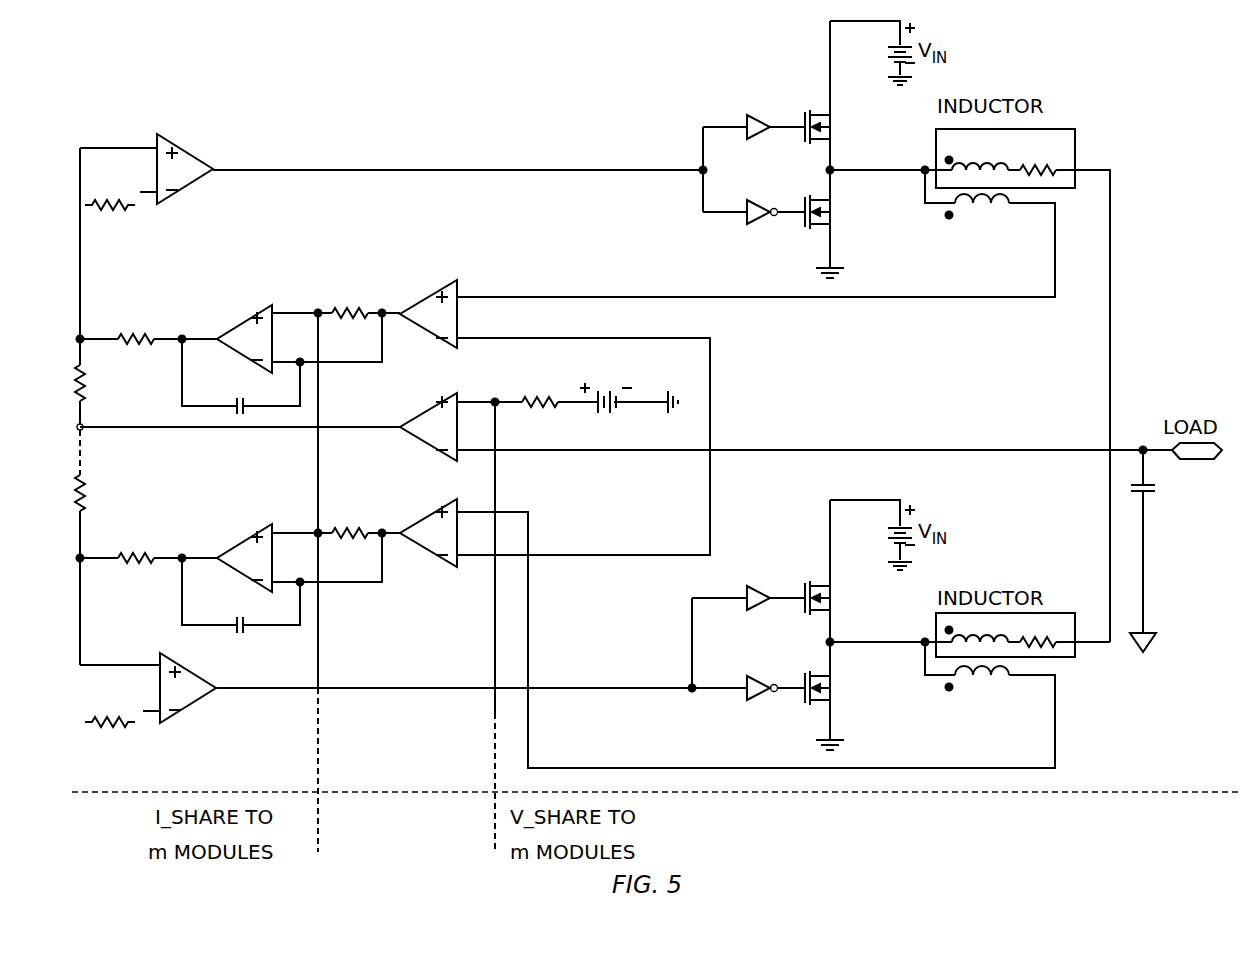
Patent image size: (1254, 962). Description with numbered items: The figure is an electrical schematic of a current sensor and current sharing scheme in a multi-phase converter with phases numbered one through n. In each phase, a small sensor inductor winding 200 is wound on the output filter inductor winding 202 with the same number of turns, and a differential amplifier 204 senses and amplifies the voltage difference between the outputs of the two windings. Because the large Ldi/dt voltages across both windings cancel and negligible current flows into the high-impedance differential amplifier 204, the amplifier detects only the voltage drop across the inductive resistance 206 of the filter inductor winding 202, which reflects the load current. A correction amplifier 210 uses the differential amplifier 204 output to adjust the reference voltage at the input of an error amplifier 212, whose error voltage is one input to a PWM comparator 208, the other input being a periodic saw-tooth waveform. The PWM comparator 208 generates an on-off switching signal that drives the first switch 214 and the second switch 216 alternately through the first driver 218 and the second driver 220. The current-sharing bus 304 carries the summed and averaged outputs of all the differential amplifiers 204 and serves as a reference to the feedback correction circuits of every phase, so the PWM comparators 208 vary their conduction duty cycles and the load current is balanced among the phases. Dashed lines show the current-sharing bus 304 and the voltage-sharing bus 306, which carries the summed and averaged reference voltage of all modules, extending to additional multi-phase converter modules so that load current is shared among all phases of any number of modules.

The sensor inductor winding 200 is at (968, 205).
The output filter inductor winding 202 is at (970, 160).
The differential amplifier 204 is at (436, 290).
The inductive resistance R_L 206 is at (1052, 172).
The PWM comparator 208 is at (183, 190).
The correction amplifier 210 is at (252, 311).
The error amplifier 212 is at (448, 394).
The switch Q1 214 is at (830, 122).
The switch Q2 216 is at (830, 208).
The driver D1 218 is at (760, 120).
The driver D2 220 is at (760, 205).
The current-sharing bus (I_Share) 304 is at (318, 487).
The voltage-sharing bus (V_Share) 306 is at (495, 758).